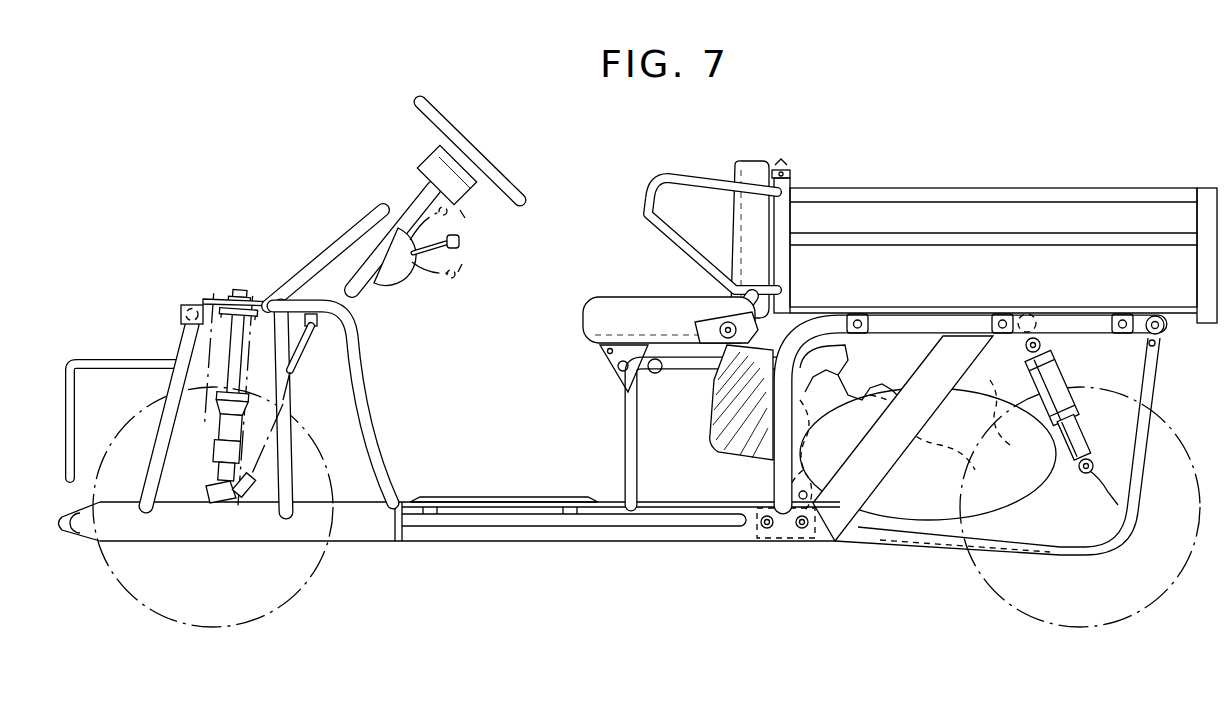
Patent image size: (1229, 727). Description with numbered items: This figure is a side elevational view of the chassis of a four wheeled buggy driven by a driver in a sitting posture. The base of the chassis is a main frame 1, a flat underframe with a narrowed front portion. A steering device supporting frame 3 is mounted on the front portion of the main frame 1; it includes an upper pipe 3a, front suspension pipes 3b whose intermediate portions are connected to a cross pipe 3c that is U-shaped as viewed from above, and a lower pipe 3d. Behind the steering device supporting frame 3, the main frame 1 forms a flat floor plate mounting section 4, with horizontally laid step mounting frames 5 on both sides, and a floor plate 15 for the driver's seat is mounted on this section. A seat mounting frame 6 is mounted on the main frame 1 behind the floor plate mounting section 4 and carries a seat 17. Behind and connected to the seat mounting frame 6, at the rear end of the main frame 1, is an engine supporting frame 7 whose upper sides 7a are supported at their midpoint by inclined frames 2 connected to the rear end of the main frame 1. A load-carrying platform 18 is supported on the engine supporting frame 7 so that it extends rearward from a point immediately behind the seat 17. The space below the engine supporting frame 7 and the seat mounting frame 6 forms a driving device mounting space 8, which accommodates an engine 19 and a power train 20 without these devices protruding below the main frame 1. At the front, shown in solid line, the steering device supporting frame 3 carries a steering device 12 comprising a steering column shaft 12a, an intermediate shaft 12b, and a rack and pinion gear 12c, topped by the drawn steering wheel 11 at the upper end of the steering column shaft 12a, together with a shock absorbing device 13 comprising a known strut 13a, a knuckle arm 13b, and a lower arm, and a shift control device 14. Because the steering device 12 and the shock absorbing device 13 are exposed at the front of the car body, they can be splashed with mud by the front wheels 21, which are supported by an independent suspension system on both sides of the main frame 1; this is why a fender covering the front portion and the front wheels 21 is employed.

The main frame 1 is at (483, 548).
The inclined frames 2 is at (892, 484).
The steering device supporting frame 3 is at (289, 282).
The upper pipe 3a is at (365, 222).
The front suspension pipes 3b is at (165, 423).
The cross pipe 3c is at (130, 367).
The lower pipe 3d is at (287, 440).
The floor plate mounting section 4 is at (488, 485).
The step mounting frames 5 is at (585, 537).
The seat mounting frame 6 is at (620, 413).
The engine supporting frame 7 is at (812, 323).
The upper sides 7a is at (982, 323).
The driving device mounting space 8 is at (873, 362).
The steering wheel 11 is at (505, 170).
The steering device 12 is at (324, 337).
The steering column shaft 12a is at (413, 205).
The intermediate shaft 12b is at (293, 352).
The rack and pinion gear 12c is at (255, 474).
The shock absorbing device 13 is at (208, 423).
The strut 13a is at (225, 342).
The knuckle arm 13b is at (207, 483).
The shift control device 14 is at (470, 238).
The floor plate 15 is at (540, 500).
The seat 17 is at (637, 293).
The load-carrying platform 18 is at (990, 186).
The engine 19 is at (722, 452).
The power train 20 is at (920, 362).
The front wheels 21 is at (307, 582).